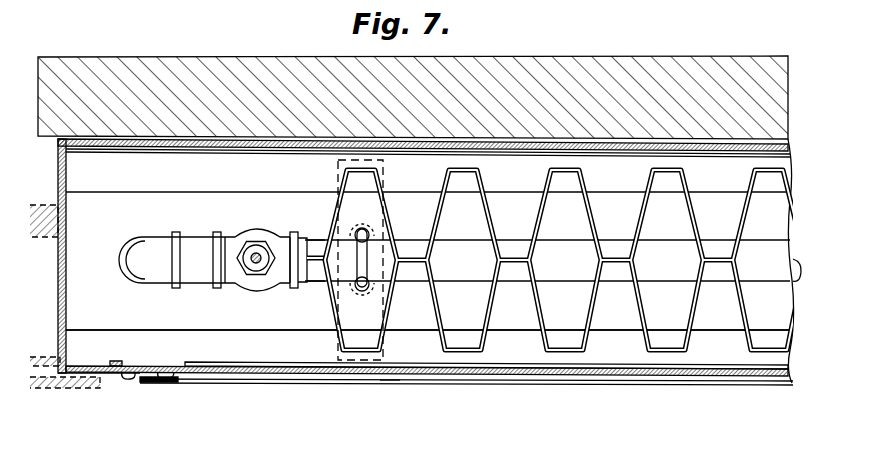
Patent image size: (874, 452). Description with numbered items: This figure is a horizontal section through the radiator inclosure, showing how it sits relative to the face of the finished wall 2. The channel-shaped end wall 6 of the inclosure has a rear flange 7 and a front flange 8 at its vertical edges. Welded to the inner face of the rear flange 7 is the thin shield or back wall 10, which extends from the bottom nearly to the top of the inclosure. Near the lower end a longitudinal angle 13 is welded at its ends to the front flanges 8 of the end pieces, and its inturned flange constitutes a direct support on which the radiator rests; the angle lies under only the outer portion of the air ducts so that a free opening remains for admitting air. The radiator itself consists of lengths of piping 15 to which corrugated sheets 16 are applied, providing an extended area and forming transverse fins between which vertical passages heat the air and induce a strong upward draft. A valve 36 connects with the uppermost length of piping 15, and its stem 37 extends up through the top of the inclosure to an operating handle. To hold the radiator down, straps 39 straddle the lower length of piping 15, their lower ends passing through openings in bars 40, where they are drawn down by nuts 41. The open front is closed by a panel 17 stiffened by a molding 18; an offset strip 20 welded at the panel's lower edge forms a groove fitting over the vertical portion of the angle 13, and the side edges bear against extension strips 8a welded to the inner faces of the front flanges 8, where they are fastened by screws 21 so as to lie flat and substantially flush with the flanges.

The finished wall 2 is at (61, 117).
The end wall 6 is at (58, 270).
The rear flange 7 is at (116, 139).
The front flange 8 is at (93, 377).
The extension strip 8a is at (118, 362).
The shield or back wall 10 is at (253, 152).
The longitudinal angle 13 is at (203, 320).
The piping 15 is at (555, 260).
The corrugated sheet 16 is at (330, 298).
The panel 17 is at (283, 383).
The molding 18 is at (379, 383).
The offset strip 20 is at (209, 362).
The screw 21 is at (123, 379).
The valve 36 is at (270, 219).
The valve stem 37 is at (257, 270).
The strap 39 is at (362, 292).
The bar 40 is at (382, 228).
The nut 41 is at (368, 221).